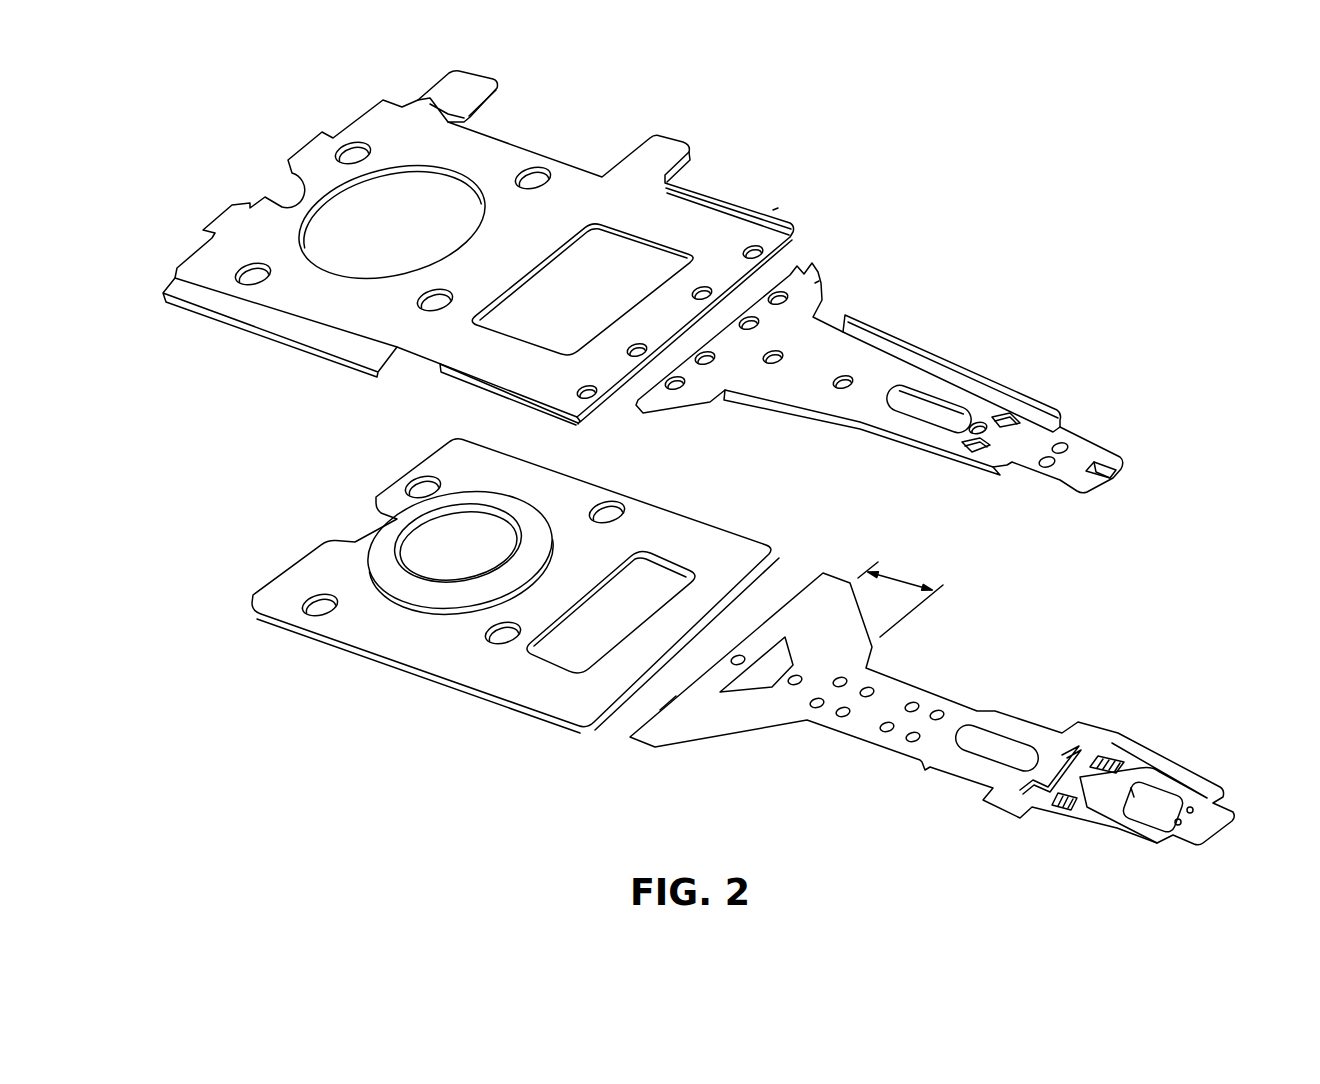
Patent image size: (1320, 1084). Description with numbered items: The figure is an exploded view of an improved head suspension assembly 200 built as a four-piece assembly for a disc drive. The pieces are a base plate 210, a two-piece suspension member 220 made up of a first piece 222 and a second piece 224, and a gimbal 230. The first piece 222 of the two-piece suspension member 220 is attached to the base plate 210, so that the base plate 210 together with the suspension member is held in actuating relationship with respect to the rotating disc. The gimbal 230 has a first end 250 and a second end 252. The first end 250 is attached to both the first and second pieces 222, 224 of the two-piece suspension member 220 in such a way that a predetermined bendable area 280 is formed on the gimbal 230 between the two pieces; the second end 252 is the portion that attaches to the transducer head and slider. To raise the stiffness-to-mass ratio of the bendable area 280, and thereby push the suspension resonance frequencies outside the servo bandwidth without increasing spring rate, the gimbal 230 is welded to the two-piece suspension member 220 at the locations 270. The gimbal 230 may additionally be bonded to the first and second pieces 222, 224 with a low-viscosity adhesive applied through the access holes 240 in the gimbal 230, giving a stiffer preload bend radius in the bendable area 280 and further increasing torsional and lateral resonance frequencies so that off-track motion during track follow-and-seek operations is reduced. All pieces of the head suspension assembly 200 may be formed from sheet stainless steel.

The head suspension assembly 200 is at (222, 673).
The base plate 210 is at (413, 670).
The two-piece suspension member 220 is at (815, 283).
The first piece 222 is at (272, 341).
The second piece 224 is at (953, 360).
The gimbal 230 is at (960, 779).
The access holes 240 is at (795, 685).
The first end 250 is at (670, 697).
The second end 252 is at (1227, 829).
The locations 270 is at (746, 252).
The predetermined bendable area 280 is at (900, 580).